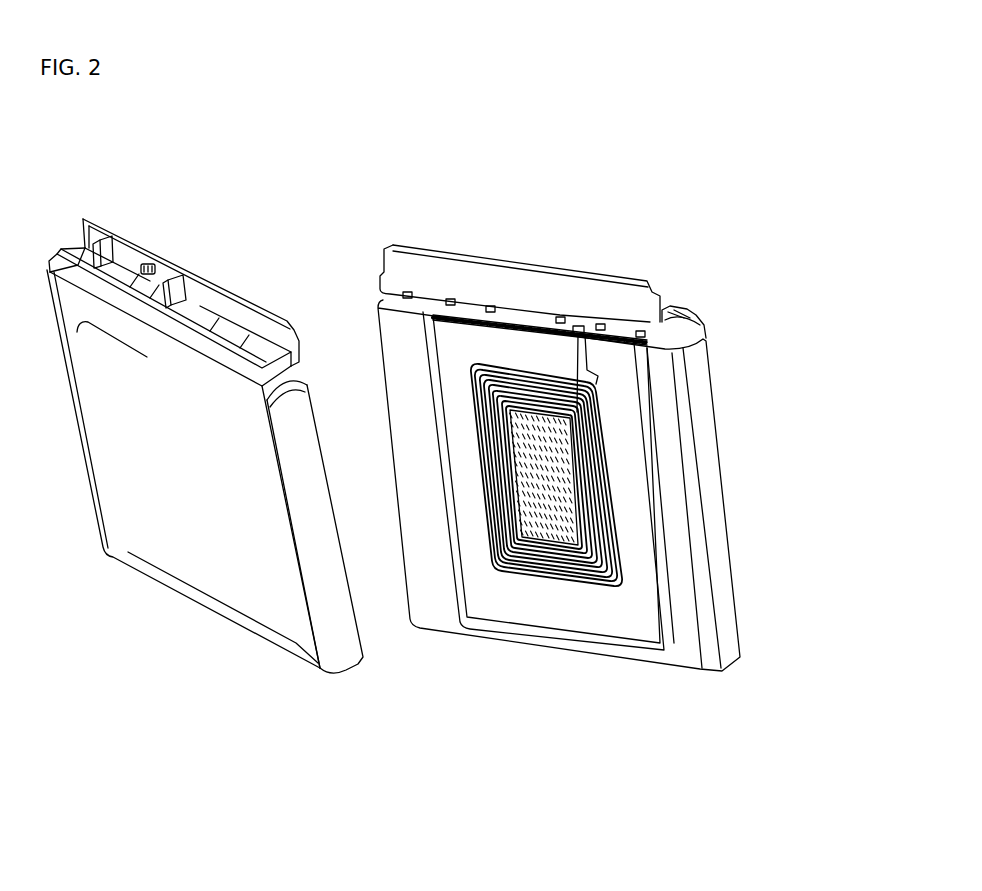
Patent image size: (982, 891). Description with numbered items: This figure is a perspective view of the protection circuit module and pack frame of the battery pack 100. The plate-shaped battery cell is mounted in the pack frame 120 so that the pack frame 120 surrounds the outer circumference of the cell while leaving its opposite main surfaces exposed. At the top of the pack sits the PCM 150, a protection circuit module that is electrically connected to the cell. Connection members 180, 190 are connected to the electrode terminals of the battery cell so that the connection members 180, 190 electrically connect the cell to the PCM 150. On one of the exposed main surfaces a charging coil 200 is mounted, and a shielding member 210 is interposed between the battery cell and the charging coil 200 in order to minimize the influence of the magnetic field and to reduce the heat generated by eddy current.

The battery pack 100 is at (82, 180).
The pack frame 120 is at (693, 474).
The PCM 150 is at (243, 317).
The connection member 180 is at (110, 262).
The connection member 190 is at (183, 296).
The charging coil 200 is at (507, 582).
The shielding member 210 is at (562, 553).